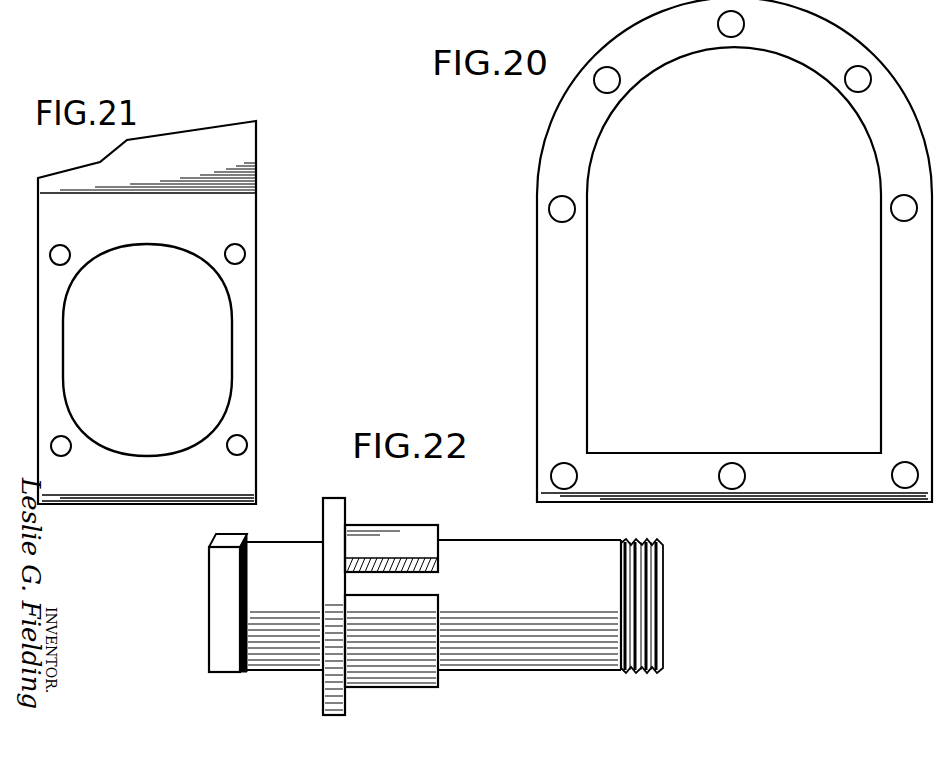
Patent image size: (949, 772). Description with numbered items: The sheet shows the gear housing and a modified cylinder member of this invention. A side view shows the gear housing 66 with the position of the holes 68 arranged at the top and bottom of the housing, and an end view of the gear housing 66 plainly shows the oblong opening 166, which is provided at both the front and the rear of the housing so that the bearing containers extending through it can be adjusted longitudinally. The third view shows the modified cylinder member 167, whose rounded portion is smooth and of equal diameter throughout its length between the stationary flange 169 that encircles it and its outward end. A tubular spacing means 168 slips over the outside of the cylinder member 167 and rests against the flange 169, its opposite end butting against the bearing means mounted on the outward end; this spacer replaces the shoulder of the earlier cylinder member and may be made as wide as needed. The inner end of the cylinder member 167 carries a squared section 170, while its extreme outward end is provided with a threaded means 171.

In FIG. 20, the gear housing 66 is at (575, 325).
In FIG. 21, the gear housing 66 is at (240, 221).
In FIG. 20, the holes 68 is at (609, 85).
In FIG. 21, the oblong opening 166 is at (217, 348).
In FIG. 22, the cylinder member 167 is at (538, 658).
In FIG. 22, the tubular spacing means 168 is at (405, 540).
In FIG. 22, the stationary flange 169 is at (330, 677).
In FIG. 22, the squared section 170 is at (218, 620).
In FIG. 22, the threaded means 171 is at (663, 655).